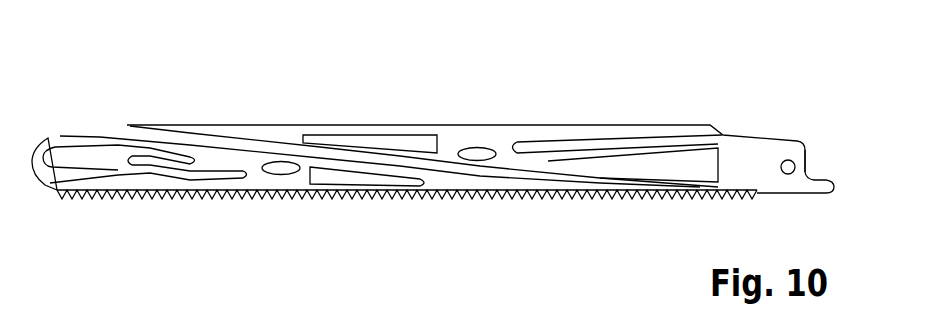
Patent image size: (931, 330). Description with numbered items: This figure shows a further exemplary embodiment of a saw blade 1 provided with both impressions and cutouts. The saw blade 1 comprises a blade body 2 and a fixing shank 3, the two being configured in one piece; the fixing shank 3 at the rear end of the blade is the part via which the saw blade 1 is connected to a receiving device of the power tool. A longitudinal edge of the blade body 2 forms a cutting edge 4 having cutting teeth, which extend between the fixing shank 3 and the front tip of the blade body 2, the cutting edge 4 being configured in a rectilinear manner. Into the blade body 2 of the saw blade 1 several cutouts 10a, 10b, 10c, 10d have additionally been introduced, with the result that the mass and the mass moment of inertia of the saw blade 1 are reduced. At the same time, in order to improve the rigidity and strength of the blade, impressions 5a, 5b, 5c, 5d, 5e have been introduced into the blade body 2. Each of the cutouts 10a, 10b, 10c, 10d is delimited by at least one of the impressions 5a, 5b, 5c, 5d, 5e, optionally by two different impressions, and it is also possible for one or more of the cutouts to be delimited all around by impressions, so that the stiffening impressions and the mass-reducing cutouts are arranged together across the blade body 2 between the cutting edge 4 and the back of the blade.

The saw blade 1 is at (707, 100).
The blade body 2 is at (305, 126).
The fixing shank 3 is at (772, 180).
The cutting edge 4 is at (400, 190).
The impression 5a is at (553, 186).
The impression 5b is at (553, 142).
The impression 5c is at (146, 182).
The impression 5d is at (480, 152).
The impression 5e is at (280, 172).
The cutout 10a is at (95, 157).
The cutout 10b is at (650, 163).
The cutout 10c is at (379, 147).
The cutout 10d is at (346, 186).